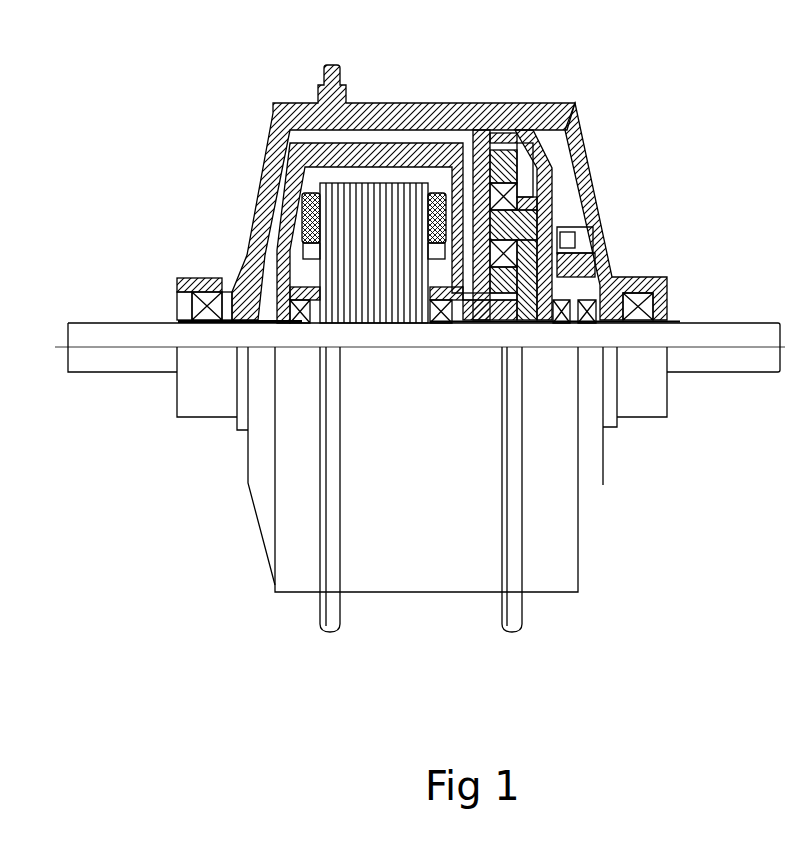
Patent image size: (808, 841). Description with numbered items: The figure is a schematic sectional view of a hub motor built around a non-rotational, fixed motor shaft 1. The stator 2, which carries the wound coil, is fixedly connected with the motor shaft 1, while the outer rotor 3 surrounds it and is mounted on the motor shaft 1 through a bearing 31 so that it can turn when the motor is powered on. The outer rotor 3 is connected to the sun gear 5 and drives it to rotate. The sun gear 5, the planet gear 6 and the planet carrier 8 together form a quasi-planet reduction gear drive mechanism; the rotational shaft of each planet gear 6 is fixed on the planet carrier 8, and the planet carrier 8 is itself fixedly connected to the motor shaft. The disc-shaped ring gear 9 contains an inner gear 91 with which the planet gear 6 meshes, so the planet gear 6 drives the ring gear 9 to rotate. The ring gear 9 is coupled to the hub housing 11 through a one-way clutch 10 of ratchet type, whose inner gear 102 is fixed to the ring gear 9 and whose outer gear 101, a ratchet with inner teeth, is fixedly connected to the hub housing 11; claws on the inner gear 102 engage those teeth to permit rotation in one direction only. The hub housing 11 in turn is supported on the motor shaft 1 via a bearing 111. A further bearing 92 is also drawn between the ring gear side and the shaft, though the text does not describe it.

The motor shaft 1 is at (217, 337).
The hub housing 11 is at (263, 152).
The outer rotor 3 is at (320, 165).
The bearing 31 is at (292, 300).
The stator 2 is at (358, 297).
The sun gear 5 is at (485, 250).
The planet gear 6 is at (485, 103).
The planet carrier 8 is at (523, 255).
The ring gear 9 is at (570, 103).
The inner gear 91 is at (463, 140).
The bearing 92 is at (588, 318).
The one-way clutch 10 is at (597, 262).
The outer gear 101 is at (604, 270).
The inner gear 102 is at (610, 266).
The bearing 111 is at (654, 318).